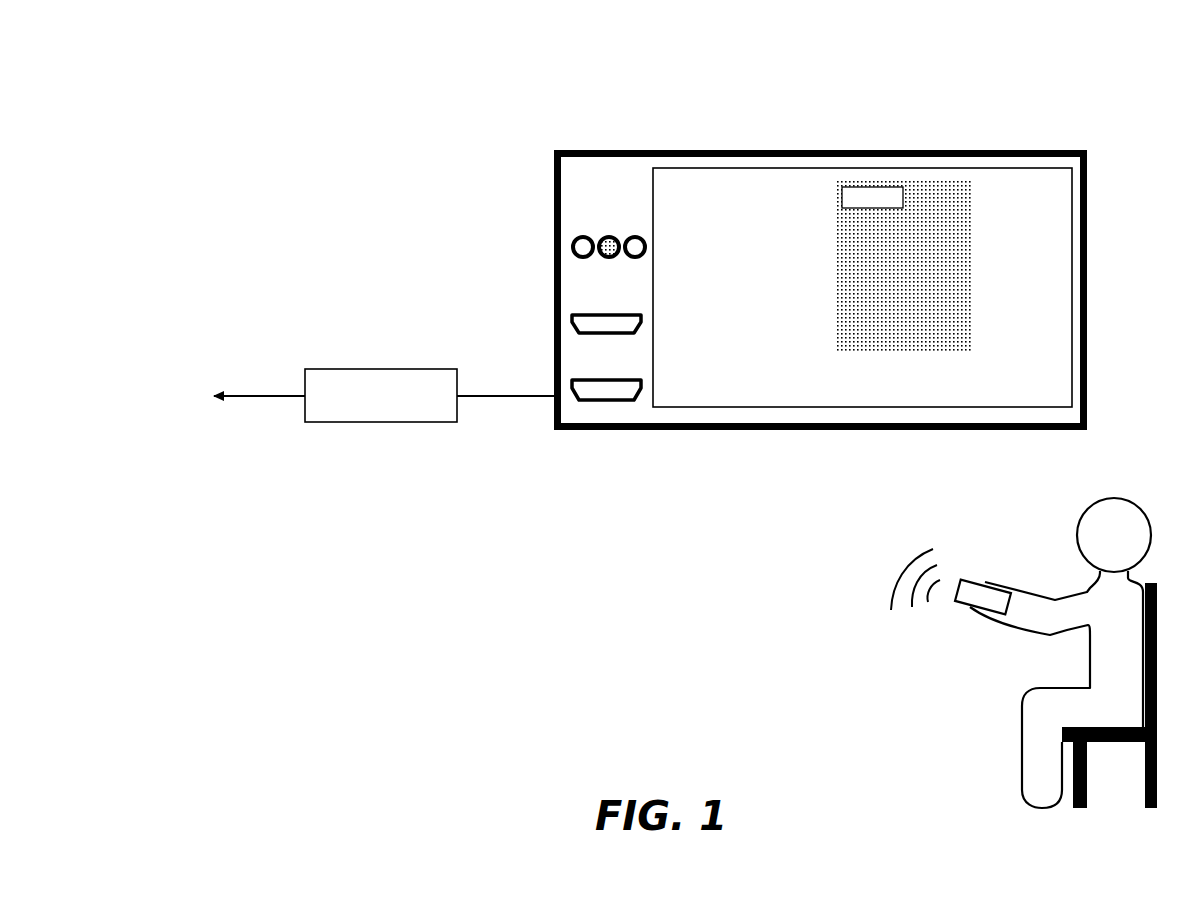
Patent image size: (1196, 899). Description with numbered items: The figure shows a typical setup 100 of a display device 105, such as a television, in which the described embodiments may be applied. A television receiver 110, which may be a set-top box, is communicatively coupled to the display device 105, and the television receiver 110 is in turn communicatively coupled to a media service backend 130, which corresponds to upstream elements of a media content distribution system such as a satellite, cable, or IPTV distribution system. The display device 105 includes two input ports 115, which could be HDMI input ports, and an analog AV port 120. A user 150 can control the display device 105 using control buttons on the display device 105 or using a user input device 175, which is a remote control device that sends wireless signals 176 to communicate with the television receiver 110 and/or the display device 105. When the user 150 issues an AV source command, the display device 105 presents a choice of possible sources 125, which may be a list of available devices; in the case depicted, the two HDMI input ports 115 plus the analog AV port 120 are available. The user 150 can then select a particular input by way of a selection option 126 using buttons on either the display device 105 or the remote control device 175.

The setup 100 is at (308, 79).
The display device 105 is at (1090, 320).
The television receiver 110 is at (343, 369).
The input ports 115 is at (548, 354).
The analog AV port 120 is at (541, 250).
The choice of possible sources 125 is at (980, 221).
The selection option 126 is at (903, 196).
The media service backend 130 is at (158, 409).
The user 150 is at (1130, 508).
The user input device 175 is at (979, 582).
The wireless signals 176 is at (926, 550).